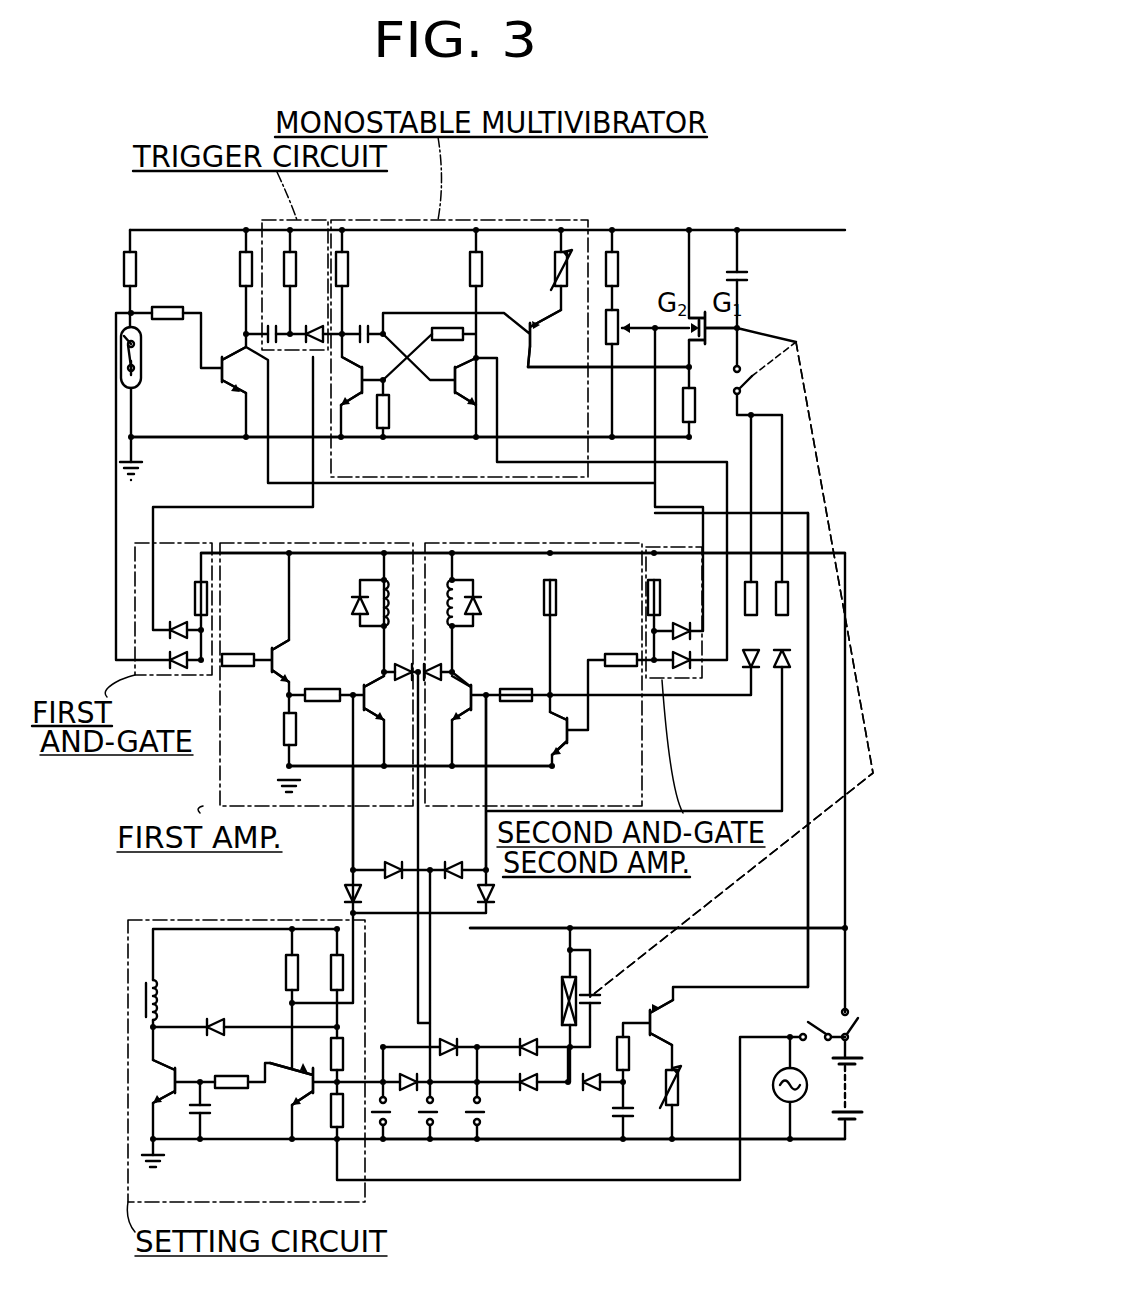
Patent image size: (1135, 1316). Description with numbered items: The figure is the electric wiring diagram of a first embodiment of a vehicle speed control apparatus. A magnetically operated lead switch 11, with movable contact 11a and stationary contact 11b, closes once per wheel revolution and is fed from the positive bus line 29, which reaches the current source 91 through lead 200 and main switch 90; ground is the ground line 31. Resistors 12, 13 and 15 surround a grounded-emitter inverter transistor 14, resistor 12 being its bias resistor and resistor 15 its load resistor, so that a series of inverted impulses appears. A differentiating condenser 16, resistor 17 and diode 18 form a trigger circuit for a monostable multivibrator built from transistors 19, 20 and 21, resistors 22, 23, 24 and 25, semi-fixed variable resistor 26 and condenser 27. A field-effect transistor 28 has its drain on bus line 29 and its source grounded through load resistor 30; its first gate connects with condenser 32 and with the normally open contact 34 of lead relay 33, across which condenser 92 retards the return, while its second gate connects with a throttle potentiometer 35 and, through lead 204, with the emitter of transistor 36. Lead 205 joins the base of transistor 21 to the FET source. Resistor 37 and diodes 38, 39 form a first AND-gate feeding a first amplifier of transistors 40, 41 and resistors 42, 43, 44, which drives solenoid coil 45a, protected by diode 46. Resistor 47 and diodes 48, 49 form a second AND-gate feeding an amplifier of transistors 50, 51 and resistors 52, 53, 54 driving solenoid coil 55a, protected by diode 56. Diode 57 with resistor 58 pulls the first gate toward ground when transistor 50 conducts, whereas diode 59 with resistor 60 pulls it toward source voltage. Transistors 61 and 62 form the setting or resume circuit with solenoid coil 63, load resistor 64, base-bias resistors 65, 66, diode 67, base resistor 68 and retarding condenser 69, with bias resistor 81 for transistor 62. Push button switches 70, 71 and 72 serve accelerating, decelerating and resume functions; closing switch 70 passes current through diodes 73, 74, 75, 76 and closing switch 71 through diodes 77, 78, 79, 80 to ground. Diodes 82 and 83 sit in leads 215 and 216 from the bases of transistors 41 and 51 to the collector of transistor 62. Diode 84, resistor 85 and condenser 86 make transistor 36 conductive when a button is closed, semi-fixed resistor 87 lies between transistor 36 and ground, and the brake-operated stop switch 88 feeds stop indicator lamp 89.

The lead switch 11 is at (145, 370).
The movable contact 11a is at (129, 360).
The stationary contact 11b is at (129, 342).
The bias resistor 12 is at (138, 278).
The resistor 13 is at (172, 308).
The transistor 14 is at (224, 384).
The load resistor 15 is at (240, 270).
The differentiating condenser 16 is at (273, 346).
The resistor 17 is at (288, 250).
The diode 18 is at (308, 329).
The transistor 19 is at (340, 412).
The transistor 20 is at (464, 386).
The transistor 21 is at (534, 336).
The resistor 22 is at (340, 252).
The resistor 23 is at (470, 275).
The resistor 24 is at (452, 327).
The resistor 25 is at (390, 412).
The semi-fixed variable resistor 26 is at (556, 267).
The condenser 27 is at (365, 324).
The field-effect transistor 28 is at (706, 310).
The positive bus line 29 is at (665, 230).
The load resistor 30 is at (692, 410).
The ground line 31 is at (187, 439).
The condenser 32 is at (750, 277).
The lead relay 33 is at (562, 990).
The relay contact 34 is at (743, 386).
The potentiometer 35 is at (606, 328).
The transistor 36 is at (654, 1023).
The resistor 37 is at (207, 598).
The diode 38 is at (176, 626).
The diode 39 is at (180, 666).
The transistor 40 is at (276, 661).
The transistor 41 is at (370, 699).
The resistor 42 is at (240, 667).
The resistor 43 is at (284, 730).
The resistor 44 is at (325, 703).
The solenoid coil 45a is at (392, 580).
The protecting diode 46 is at (354, 606).
The resistor 47 is at (648, 598).
The diode 48 is at (674, 627).
The diode 49 is at (686, 669).
The transistor 50 is at (562, 733).
The transistor 51 is at (469, 699).
The resistor 52 is at (622, 667).
The resistor 53 is at (556, 600).
The resistor 54 is at (518, 689).
The solenoid coil 55a is at (445, 590).
The protecting diode 56 is at (481, 605).
The diode 57 is at (753, 670).
The resistor 58 is at (748, 580).
The diode 59 is at (793, 658).
The resistor 60 is at (790, 603).
The transistor 61 is at (173, 1082).
The transistor 62 is at (300, 1072).
The solenoid coil 63 is at (160, 1000).
The load resistor 64 is at (286, 970).
The base-bias resistor 65 is at (343, 975).
The base-bias resistor 66 is at (343, 1050).
The diode 67 is at (218, 1024).
The base resistor 68 is at (232, 1090).
The condenser 69 is at (214, 1120).
The push button switch 70 is at (484, 1126).
The push button switch 71 is at (437, 1126).
The push button switch 72 is at (390, 1126).
The diode 73 is at (530, 1046).
The diode 74 is at (455, 1040).
The diode 75 is at (398, 671).
The diode 76 is at (437, 668).
The diode 77 is at (529, 1090).
The diode 78 is at (410, 1074).
The diode 79 is at (452, 866).
The diode 80 is at (393, 867).
The bias resistor 81 is at (342, 1125).
The diode 82 is at (348, 889).
The diode 83 is at (495, 895).
The diode 84 is at (591, 1090).
The resistor 85 is at (629, 1044).
The condenser 86 is at (636, 1116).
The semi-fixed resistor 87 is at (679, 1092).
The stop switch 88 is at (812, 1027).
The stop indicator lamp 89 is at (774, 1080).
The main switch 90 is at (858, 1023).
The current source 91 is at (868, 1058).
The condenser 92 is at (600, 999).
The lead 200 is at (847, 825).
The lead 204 is at (808, 895).
The lead 205 is at (566, 368).
The connecting lead 215 is at (352, 843).
The connecting lead 216 is at (478, 823).